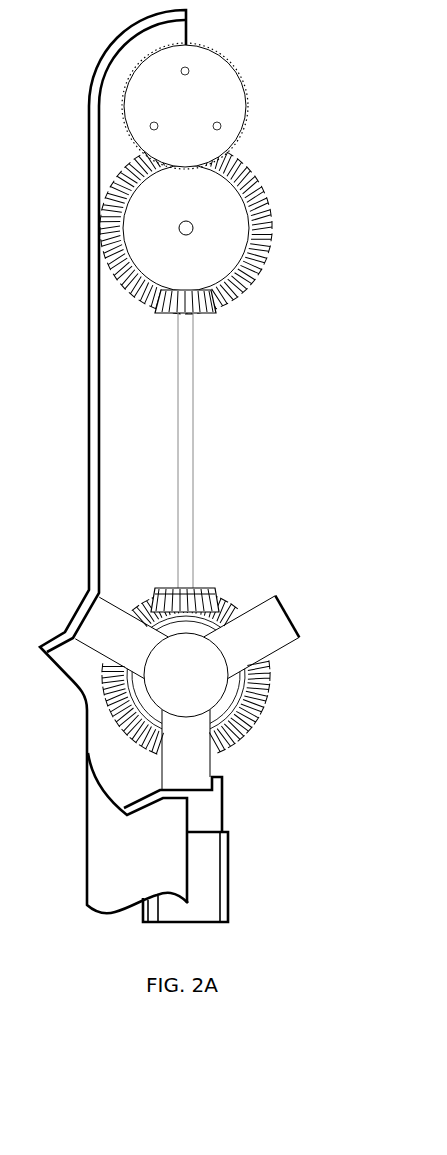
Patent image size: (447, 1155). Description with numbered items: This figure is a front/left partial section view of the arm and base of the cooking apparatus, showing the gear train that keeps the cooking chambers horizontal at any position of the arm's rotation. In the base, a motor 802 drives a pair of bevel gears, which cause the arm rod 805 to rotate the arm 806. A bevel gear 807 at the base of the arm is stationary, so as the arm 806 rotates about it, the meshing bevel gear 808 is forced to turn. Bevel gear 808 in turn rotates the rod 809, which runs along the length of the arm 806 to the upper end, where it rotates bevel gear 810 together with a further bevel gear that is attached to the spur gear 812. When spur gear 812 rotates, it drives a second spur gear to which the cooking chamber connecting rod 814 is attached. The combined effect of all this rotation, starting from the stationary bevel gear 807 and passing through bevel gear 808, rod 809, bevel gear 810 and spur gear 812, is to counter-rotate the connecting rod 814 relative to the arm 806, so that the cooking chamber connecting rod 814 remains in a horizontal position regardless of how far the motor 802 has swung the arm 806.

The motor 802 is at (202, 880).
The arm rod 805 is at (183, 767).
The arm 806 is at (95, 558).
The bevel gear 807 is at (260, 705).
The bevel gear 808 is at (195, 600).
The rod 809 is at (187, 502).
The bevel gear 810 is at (185, 303).
The spur gear 812 is at (207, 242).
The cooking chamber connecting rod 814 is at (210, 106).